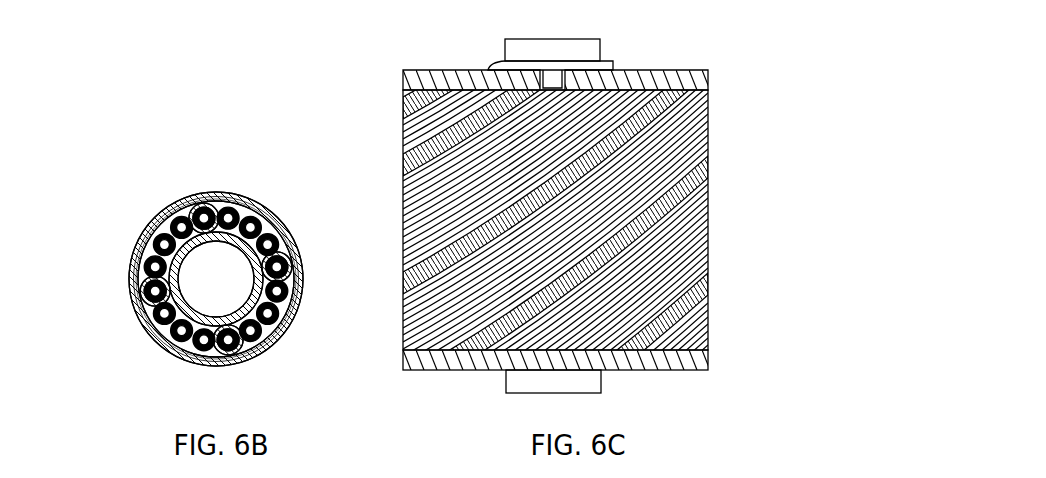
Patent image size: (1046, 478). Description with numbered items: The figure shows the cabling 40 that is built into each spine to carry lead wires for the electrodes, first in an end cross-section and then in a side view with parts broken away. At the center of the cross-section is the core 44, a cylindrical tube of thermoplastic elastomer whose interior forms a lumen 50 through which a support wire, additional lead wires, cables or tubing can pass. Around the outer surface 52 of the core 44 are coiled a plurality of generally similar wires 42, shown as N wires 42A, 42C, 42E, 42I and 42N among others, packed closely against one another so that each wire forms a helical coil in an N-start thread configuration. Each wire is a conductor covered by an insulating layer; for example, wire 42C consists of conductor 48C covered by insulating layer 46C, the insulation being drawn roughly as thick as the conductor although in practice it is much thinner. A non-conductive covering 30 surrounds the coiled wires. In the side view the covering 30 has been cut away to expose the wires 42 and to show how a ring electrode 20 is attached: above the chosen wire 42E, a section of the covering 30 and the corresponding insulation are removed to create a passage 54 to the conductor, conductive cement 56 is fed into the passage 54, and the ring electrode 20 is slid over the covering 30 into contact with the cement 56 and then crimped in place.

In FIG. 6C, the ring electrode 20 is at (551, 39).
In FIG. 6B, the non-conductive covering 30 is at (158, 345).
In FIG. 6C, the non-conductive covering 30 is at (709, 79).
In FIG. 6B, the cabling 40 is at (189, 284).
In FIG. 6C, the wires 42 is at (553, 239).
In FIG. 6B, the wire 42A is at (203, 205).
In FIG. 6B, the wire 42C is at (252, 215).
In FIG. 6B, the wire 42E is at (297, 266).
In FIG. 6C, the wire 42E is at (403, 167).
In FIG. 6B, the wire 42I is at (230, 358).
In FIG. 6B, the wire 42N is at (162, 222).
In FIG. 6B, the core 44 is at (291, 303).
In FIG. 6B, the insulating layer 46C is at (283, 227).
In FIG. 6B, the conductor 48C is at (268, 222).
In FIG. 6B, the lumen 50 is at (207, 285).
In FIG. 6B, the outer surface 52 is at (284, 325).
In FIG. 6C, the passage 54 is at (543, 87).
In FIG. 6C, the conductive cement 56 is at (606, 62).